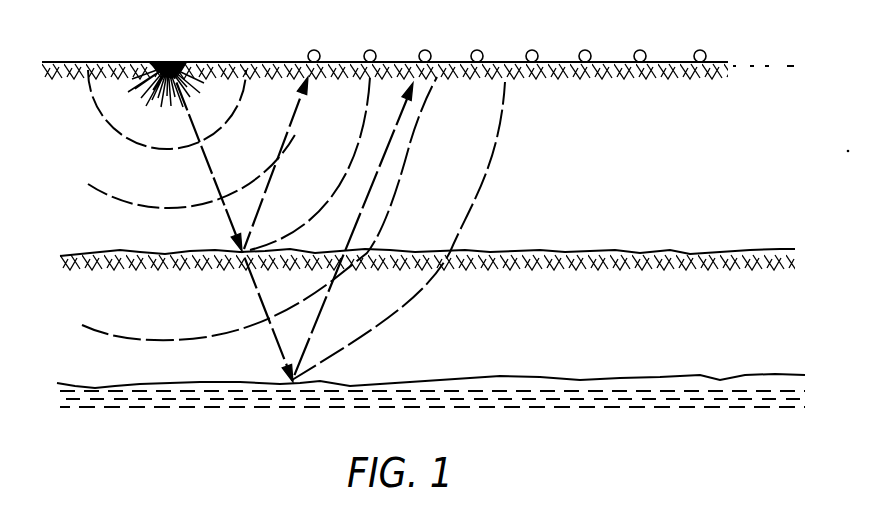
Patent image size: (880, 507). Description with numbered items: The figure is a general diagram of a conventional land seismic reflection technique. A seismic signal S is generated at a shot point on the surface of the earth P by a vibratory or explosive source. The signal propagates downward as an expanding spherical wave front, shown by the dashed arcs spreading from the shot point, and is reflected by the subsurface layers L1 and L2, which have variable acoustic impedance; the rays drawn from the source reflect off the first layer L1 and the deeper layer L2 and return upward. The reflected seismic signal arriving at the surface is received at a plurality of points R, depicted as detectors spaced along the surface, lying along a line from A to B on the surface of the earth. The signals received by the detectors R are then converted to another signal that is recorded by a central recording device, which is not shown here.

The surface of the earth P is at (102, 62).
The seismic signal S is at (168, 62).
The line A-B A is at (313, 50).
The receiving points R is at (477, 50).
The line A- B is at (779, 66).
The subsurface layer L1 is at (635, 253).
The subsurface layer L2 is at (642, 379).